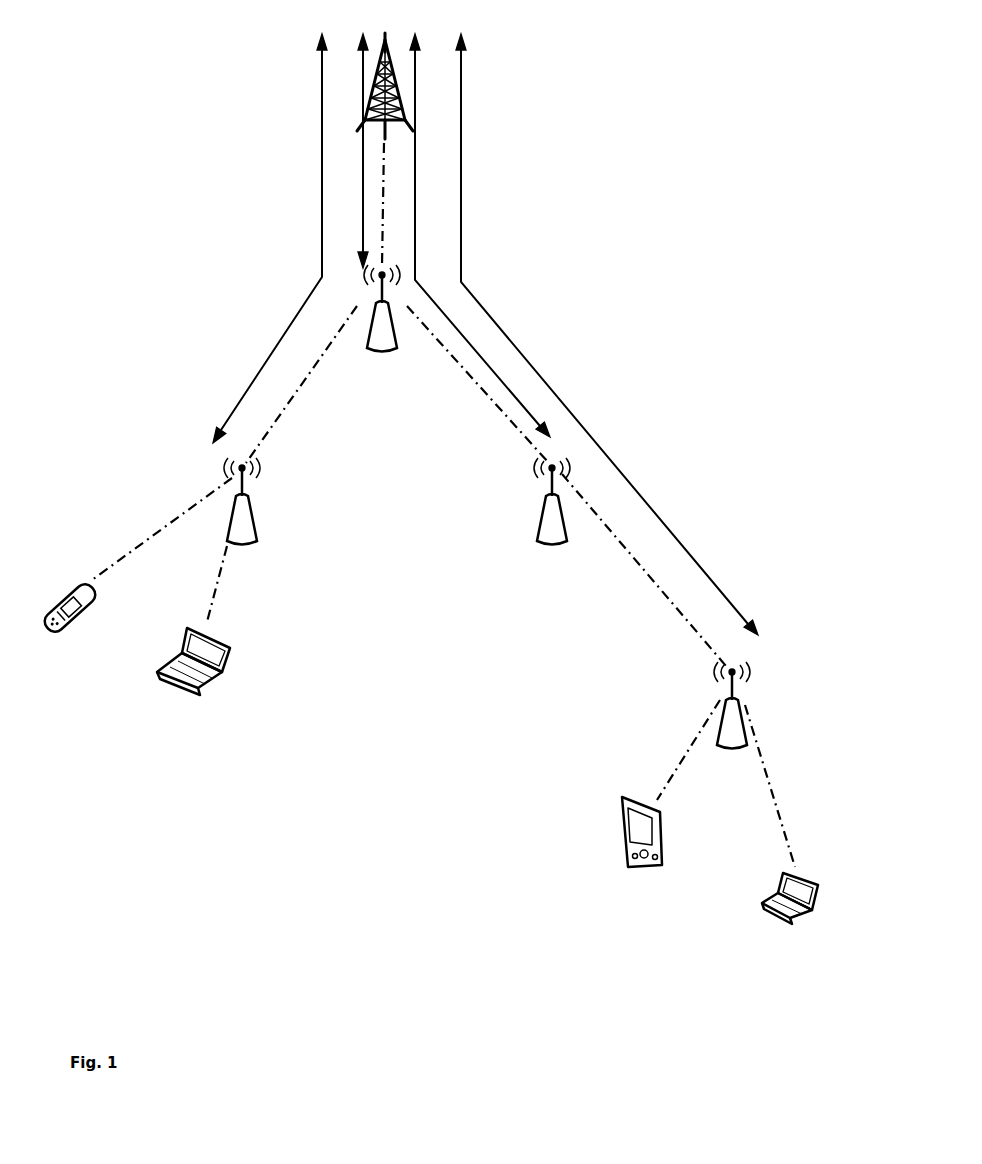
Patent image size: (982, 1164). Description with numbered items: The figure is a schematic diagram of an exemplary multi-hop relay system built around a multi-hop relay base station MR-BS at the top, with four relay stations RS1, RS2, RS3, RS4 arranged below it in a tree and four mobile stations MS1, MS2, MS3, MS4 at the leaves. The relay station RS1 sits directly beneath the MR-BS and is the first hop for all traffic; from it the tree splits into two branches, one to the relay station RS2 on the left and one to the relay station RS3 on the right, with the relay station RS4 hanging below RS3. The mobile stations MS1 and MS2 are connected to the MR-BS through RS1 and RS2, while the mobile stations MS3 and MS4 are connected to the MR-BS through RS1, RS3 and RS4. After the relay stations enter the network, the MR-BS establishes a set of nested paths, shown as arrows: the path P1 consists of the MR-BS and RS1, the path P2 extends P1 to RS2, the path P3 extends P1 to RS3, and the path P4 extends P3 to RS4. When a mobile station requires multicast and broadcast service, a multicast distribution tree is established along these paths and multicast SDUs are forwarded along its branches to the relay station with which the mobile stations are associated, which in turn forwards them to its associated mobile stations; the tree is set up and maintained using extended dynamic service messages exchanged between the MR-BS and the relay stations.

The multi-hop relay base station MR-BS is at (402, 78).
The path P1 is at (351, 151).
The path P2 is at (270, 238).
The path P3 is at (480, 235).
The path P4 is at (607, 334).
The relay station RS1 is at (405, 304).
The relay station RS2 is at (225, 493).
The relay station RS3 is at (569, 490).
The relay station RS4 is at (752, 697).
The mobile station MS1 is at (69, 597).
The mobile station MS2 is at (219, 660).
The mobile station MS3 is at (621, 824).
The mobile station MS4 is at (809, 890).